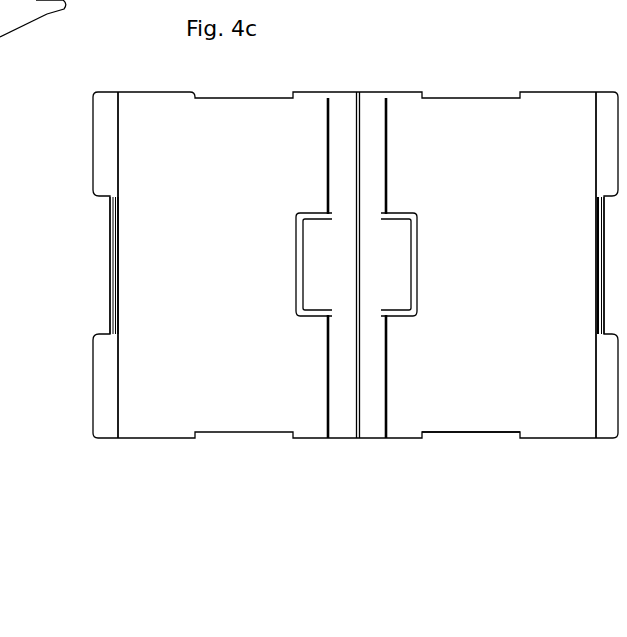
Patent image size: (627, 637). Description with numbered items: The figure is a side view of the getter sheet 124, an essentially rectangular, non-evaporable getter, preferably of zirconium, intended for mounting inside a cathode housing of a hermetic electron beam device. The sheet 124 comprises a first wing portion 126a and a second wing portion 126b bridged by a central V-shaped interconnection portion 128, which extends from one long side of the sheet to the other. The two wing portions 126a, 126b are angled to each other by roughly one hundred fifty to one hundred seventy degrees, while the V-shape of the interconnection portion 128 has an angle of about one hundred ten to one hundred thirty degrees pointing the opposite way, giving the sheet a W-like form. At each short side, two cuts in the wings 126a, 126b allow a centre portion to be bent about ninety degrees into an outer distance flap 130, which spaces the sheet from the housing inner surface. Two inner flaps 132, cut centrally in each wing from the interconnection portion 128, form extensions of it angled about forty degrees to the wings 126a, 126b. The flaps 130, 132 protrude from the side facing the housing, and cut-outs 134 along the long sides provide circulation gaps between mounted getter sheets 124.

The getter sheet 124 is at (530, 88).
The first wing portion 126a is at (203, 330).
The second wing portion 126b is at (505, 315).
The central V-shaped interconnection portion 128 is at (372, 98).
The outer distance flap 130 is at (110, 281).
The inner flap 132 is at (387, 277).
The cut-out 134 is at (470, 428).